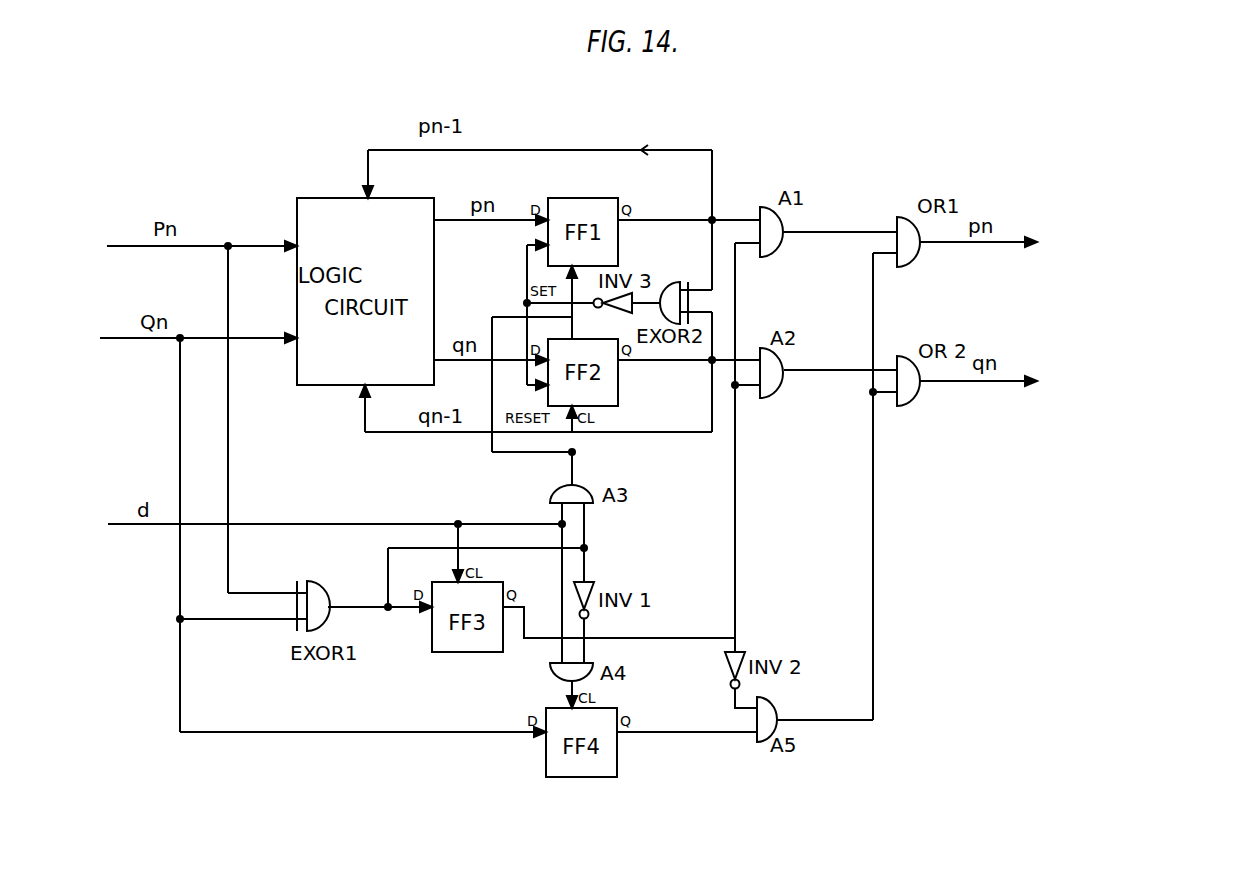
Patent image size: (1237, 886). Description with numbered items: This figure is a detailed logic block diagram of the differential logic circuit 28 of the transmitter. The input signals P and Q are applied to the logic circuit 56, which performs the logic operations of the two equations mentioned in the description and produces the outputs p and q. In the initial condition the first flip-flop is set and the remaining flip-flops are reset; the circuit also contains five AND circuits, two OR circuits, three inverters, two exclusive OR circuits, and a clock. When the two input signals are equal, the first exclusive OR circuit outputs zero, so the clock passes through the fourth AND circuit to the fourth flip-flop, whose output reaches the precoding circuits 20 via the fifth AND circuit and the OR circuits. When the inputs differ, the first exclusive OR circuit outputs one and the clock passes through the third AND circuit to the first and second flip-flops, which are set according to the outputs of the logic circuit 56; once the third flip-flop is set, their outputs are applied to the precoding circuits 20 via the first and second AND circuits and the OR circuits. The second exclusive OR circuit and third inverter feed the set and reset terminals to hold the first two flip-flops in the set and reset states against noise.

The logic circuit 56 is at (333, 197).
The differential logic circuit 28 is at (864, 160).
The precoding circuit 20 is at (1112, 313).